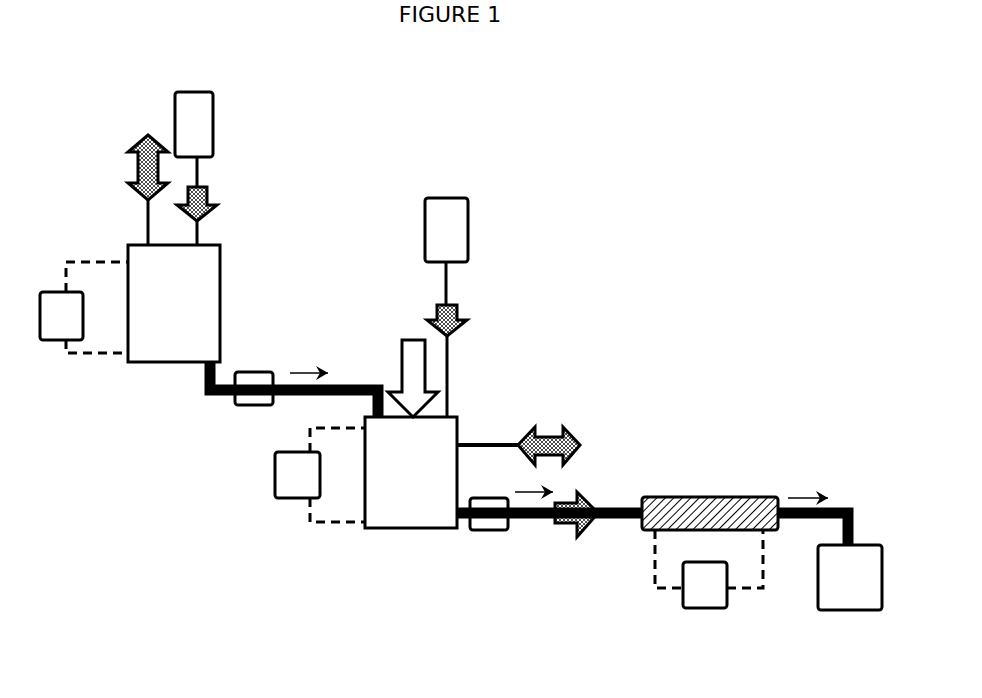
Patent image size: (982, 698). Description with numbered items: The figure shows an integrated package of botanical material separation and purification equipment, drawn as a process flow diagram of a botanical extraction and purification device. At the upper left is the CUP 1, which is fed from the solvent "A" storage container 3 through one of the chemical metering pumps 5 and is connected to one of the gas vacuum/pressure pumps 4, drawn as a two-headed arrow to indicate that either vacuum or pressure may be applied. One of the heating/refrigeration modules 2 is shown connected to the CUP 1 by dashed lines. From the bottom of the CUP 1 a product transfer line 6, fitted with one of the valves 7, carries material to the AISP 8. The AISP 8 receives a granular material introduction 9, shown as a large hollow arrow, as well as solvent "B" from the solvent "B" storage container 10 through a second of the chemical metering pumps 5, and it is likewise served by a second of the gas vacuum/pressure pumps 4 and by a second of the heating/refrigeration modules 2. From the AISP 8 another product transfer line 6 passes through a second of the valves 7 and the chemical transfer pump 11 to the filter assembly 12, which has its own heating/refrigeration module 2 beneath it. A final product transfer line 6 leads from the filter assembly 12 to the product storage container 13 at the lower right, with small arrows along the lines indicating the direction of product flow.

The CUP 1 is at (174, 303).
The heating/refrigeration modules 2 is at (401, 435).
The solvent "A" storage container 3 is at (194, 140).
The gas vacuum/pressure pumps 4 is at (134, 168).
The chemical metering pumps 5 is at (216, 197).
The product transfer lines 6 is at (208, 396).
The valves 7 is at (251, 408).
The AISP 8 is at (411, 472).
The granular material introduction 9 is at (399, 355).
The solvent "B" storage container 10 is at (446, 230).
The chemical transfer pump 11 is at (565, 532).
The filter assembly 12 is at (710, 495).
The product storage container 13 is at (850, 577).